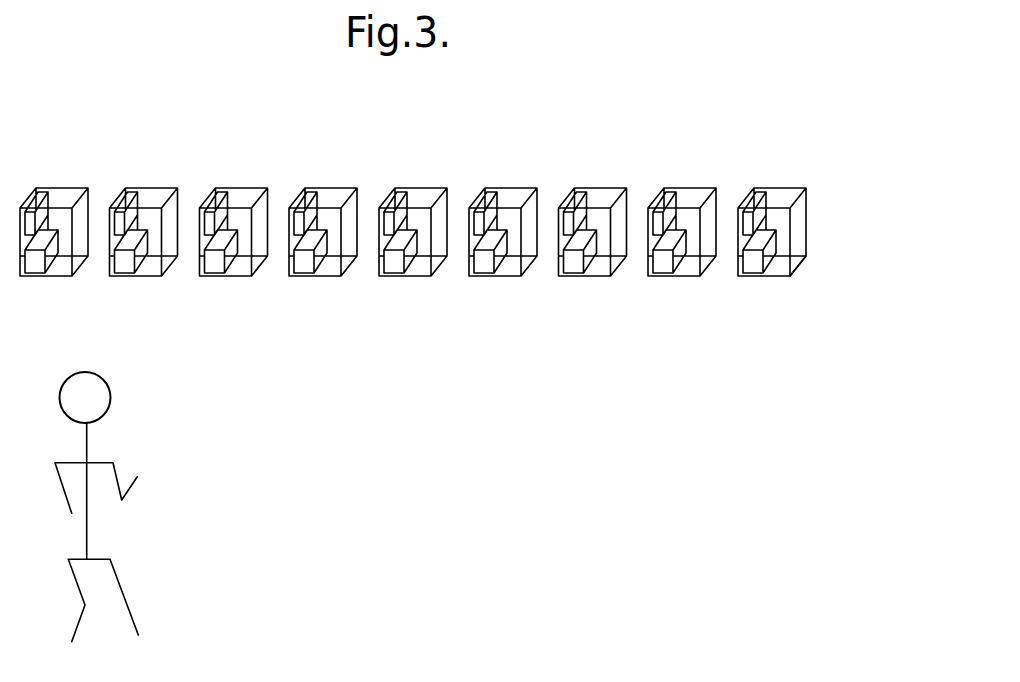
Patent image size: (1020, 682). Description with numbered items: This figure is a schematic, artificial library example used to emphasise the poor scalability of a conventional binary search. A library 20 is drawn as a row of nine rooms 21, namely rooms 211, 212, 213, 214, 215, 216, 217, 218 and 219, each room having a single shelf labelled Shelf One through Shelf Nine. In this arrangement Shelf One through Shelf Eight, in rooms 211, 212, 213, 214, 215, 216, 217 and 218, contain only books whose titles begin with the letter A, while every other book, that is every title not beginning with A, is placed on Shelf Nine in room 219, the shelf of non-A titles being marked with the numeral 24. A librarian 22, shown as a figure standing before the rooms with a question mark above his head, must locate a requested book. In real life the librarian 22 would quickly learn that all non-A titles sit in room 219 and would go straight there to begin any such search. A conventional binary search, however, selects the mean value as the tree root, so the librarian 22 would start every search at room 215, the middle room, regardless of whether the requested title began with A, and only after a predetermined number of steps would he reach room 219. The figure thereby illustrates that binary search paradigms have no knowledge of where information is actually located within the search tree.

The library 20 is at (622, 70).
The rooms 21 is at (434, 207).
The room 211 is at (88, 188).
The room 212 is at (178, 188).
The room 213 is at (268, 188).
The room 214 is at (357, 188).
The room 215 is at (447, 188).
The room 216 is at (537, 188).
The room 217 is at (626, 188).
The room 218 is at (716, 188).
The room 219 is at (806, 188).
The librarian 22 is at (87, 531).
The shelf with non-A titles 24 is at (797, 258).